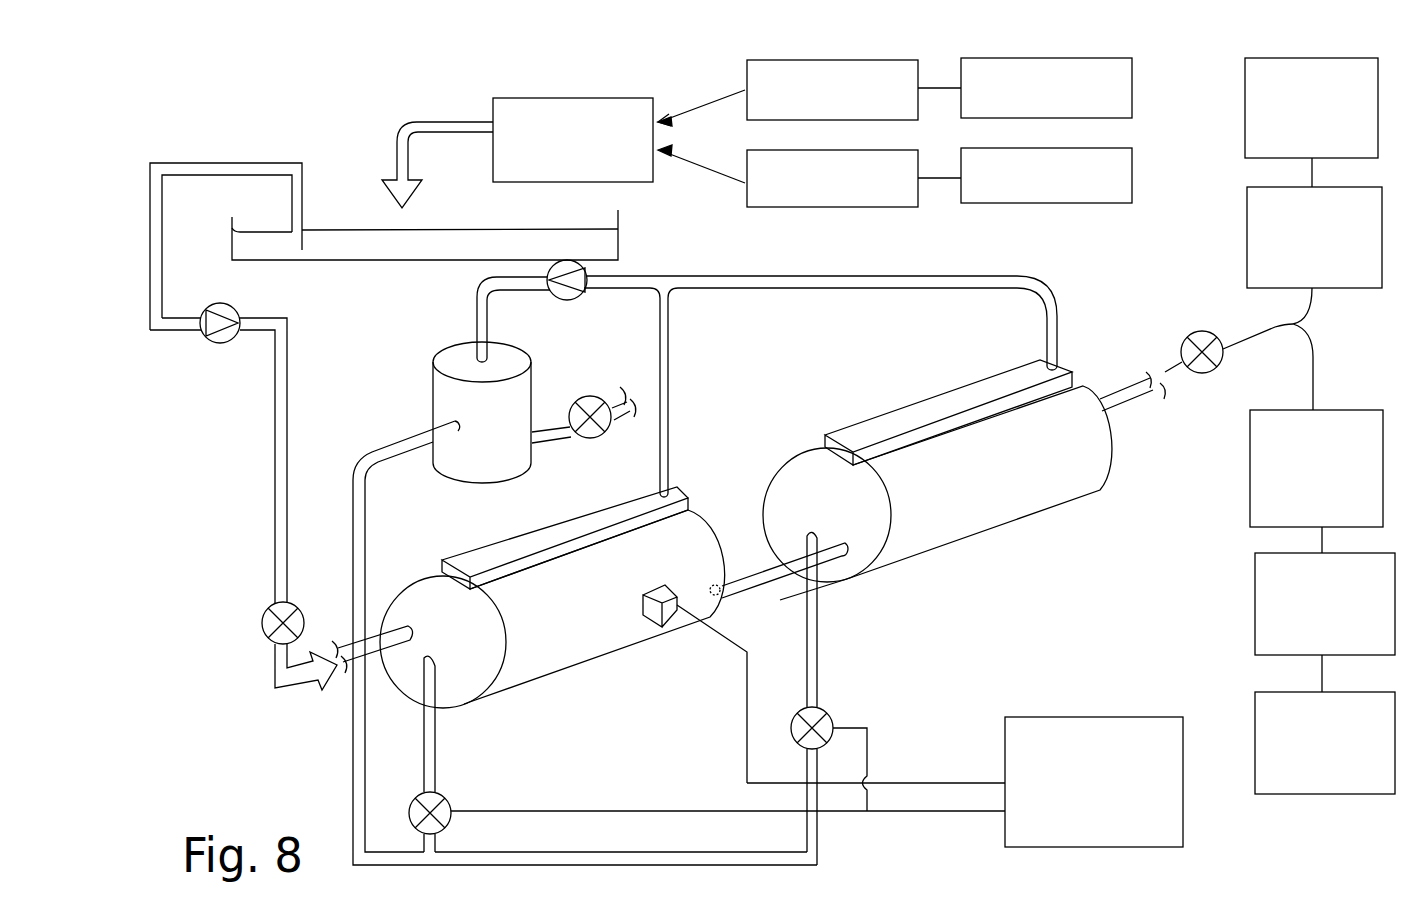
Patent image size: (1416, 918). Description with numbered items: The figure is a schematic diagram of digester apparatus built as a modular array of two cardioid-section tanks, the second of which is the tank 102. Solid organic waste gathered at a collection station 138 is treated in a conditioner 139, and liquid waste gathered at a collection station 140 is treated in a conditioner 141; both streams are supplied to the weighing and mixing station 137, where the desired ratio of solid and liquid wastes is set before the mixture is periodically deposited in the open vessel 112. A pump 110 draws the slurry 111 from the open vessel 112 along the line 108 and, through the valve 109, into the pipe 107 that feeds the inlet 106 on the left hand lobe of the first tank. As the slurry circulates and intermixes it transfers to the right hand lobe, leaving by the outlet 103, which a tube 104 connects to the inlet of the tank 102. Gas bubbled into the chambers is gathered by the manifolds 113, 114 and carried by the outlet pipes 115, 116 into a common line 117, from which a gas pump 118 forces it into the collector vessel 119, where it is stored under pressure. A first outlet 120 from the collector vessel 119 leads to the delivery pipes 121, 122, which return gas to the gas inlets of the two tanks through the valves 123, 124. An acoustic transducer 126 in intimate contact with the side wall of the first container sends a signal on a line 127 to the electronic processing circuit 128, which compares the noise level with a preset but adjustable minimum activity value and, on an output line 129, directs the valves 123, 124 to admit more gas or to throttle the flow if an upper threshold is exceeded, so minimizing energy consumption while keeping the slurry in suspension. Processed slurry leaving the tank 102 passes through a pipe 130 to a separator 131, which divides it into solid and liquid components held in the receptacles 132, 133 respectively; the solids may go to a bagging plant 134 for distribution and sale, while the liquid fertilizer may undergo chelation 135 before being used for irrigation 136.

The tank 102 is at (1002, 500).
The outlet 103 is at (708, 590).
The tube 104 is at (878, 573).
The inlet 106 is at (425, 628).
The pipe 107 is at (372, 652).
The line 108 is at (288, 368).
The valve 109 is at (262, 621).
The pump 110 is at (226, 342).
The slurry 111 is at (360, 252).
The open vessel 112 is at (618, 212).
The manifold 113 is at (526, 548).
The manifold 114 is at (903, 420).
The outlet pipe 115 is at (658, 462).
The outlet pipe 116 is at (1048, 330).
The common line 117 is at (477, 325).
The gas pump 118 is at (566, 300).
The collector vessel 119 is at (444, 400).
The first outlet 120 is at (365, 530).
The delivery pipe 121 is at (436, 748).
The delivery pipe 122 is at (814, 665).
The valve 123 is at (448, 806).
The valve 124 is at (832, 716).
The acoustic transducer 126 is at (663, 612).
The line 127 is at (747, 775).
The electronic processing circuit 128 is at (1092, 717).
The output line 129 is at (975, 814).
The pipe 130 is at (1140, 397).
The separator 131 is at (1200, 340).
The receptacle 132 is at (1247, 248).
The receptacle 133 is at (1250, 490).
The bagging plant 134 is at (1245, 134).
The chelation 135 is at (1255, 632).
The irrigation 136 is at (1255, 745).
The weighing and mixing station 137 is at (548, 98).
The collection station 138 is at (1132, 186).
The conditioner 139 is at (778, 207).
The collection station 140 is at (1132, 101).
The conditioner 141 is at (747, 77).